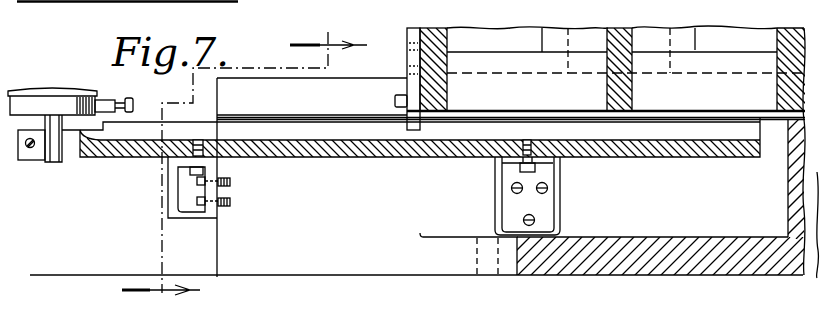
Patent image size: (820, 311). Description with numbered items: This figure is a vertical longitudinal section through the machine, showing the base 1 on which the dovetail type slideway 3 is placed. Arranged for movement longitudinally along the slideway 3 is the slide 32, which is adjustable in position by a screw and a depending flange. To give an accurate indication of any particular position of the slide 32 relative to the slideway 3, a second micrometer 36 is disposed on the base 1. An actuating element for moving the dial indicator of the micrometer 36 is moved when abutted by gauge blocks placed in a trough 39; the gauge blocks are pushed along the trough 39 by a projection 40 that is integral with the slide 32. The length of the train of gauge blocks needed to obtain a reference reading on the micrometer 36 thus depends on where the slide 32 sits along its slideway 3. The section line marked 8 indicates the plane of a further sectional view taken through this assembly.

The base 1 is at (405, 228).
The slideway 3 is at (315, 104).
The section line 8- 8 is at (244, 160).
The slide 32 is at (520, 36).
The second micrometer 36 is at (41, 89).
The trough 39 is at (392, 155).
The projection 40 is at (397, 96).